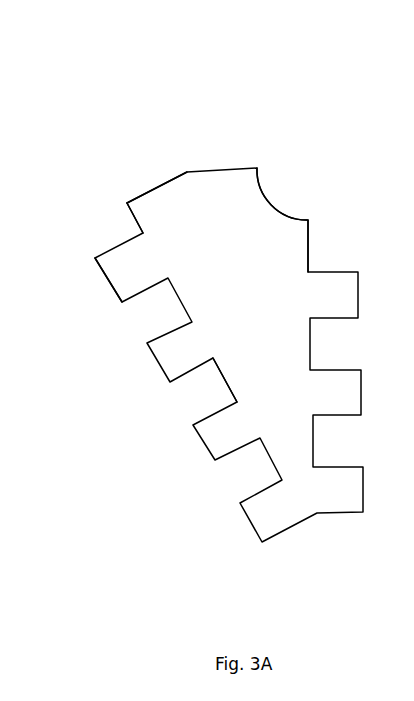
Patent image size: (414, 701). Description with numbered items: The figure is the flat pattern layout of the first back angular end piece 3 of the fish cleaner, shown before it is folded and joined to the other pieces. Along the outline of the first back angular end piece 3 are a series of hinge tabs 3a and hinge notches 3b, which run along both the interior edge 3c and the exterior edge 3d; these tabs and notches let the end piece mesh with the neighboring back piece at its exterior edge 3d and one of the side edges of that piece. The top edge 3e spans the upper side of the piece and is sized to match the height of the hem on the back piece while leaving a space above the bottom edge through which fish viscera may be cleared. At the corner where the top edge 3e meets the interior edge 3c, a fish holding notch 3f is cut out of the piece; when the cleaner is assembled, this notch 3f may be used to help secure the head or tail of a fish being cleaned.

The first back angular end piece 3 is at (220, 213).
The hinge tabs 3a is at (110, 285).
The hinge notches 3b is at (225, 382).
The interior edge 3c is at (308, 237).
The exterior edge 3d is at (137, 223).
The top edge 3e is at (148, 190).
The fish holding notch 3f is at (270, 203).